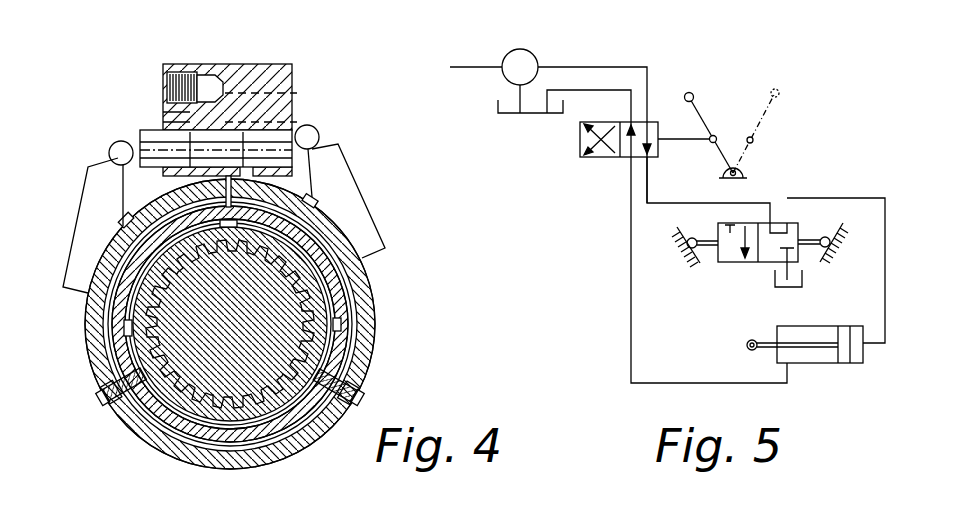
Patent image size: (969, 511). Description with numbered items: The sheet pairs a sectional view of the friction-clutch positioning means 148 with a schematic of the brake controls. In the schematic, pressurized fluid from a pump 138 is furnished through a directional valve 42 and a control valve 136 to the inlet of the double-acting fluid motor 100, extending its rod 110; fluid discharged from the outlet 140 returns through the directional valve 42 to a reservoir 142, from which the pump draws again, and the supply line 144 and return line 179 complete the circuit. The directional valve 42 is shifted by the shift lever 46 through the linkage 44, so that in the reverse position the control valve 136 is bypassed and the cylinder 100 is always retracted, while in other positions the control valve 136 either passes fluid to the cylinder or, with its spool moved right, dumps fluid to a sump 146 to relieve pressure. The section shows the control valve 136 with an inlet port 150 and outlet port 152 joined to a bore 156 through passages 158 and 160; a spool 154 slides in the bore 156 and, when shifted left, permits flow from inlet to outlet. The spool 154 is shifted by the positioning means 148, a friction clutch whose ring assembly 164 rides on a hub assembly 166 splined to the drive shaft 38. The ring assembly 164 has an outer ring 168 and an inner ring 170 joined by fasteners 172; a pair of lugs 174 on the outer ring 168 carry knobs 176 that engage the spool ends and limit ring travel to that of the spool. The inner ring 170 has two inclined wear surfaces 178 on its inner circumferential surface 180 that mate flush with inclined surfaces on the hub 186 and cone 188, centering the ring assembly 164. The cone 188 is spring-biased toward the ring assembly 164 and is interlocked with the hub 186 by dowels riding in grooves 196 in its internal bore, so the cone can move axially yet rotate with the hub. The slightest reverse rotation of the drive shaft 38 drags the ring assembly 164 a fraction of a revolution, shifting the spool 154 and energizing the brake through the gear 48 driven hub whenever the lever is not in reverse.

In FIG. 4, the drive shaft 38 is at (148, 318).
In FIG. 5, the directional valve 42 is at (580, 149).
In FIG. 5, the linkage 44 is at (682, 141).
In FIG. 5, the shift lever 46 is at (703, 117).
In FIG. 4, the output gear 48 is at (182, 396).
In FIG. 5, the fluid motor 100 is at (803, 325).
In FIG. 5, the rod 110 is at (747, 341).
In FIG. 5, the control valve 136 is at (740, 263).
In FIG. 5, the pump 138 is at (536, 57).
In FIG. 5, the outlet 140 is at (790, 364).
In FIG. 5, the reservoir 142 is at (512, 116).
In FIG. 5, the supply line 144 is at (478, 64).
In FIG. 5, the sump 146 is at (803, 281).
In FIG. 4, the positioning means 148 is at (85, 358).
In FIG. 5, the positioning means 148 is at (673, 262).
In FIG. 4, the inlet port 150 is at (166, 88).
In FIG. 4, the outlet port 152 is at (297, 95).
In FIG. 4, the spool 154 is at (140, 135).
In FIG. 4, the bore 156 is at (205, 172).
In FIG. 4, the passage 158 is at (205, 112).
In FIG. 4, the passage 160 is at (162, 117).
In FIG. 4, the ring assembly 164 is at (370, 380).
In FIG. 4, the hub assembly 166 is at (340, 353).
In FIG. 4, the outer ring 168 is at (363, 298).
In FIG. 4, the inner ring 170 is at (342, 280).
In FIG. 4, the fasteners 172 is at (99, 398).
In FIG. 4, the lugs 174 is at (88, 190).
In FIG. 4, the knobs 176 is at (109, 151).
In FIG. 4, the wear surfaces 178 is at (157, 400).
In FIG. 5, the return line 179 is at (866, 348).
In FIG. 4, the inner circumferential surface 180 is at (170, 415).
In FIG. 4, the hub 186 is at (118, 395).
In FIG. 4, the cone 188 is at (160, 380).
In FIG. 4, the grooves 196 is at (124, 332).